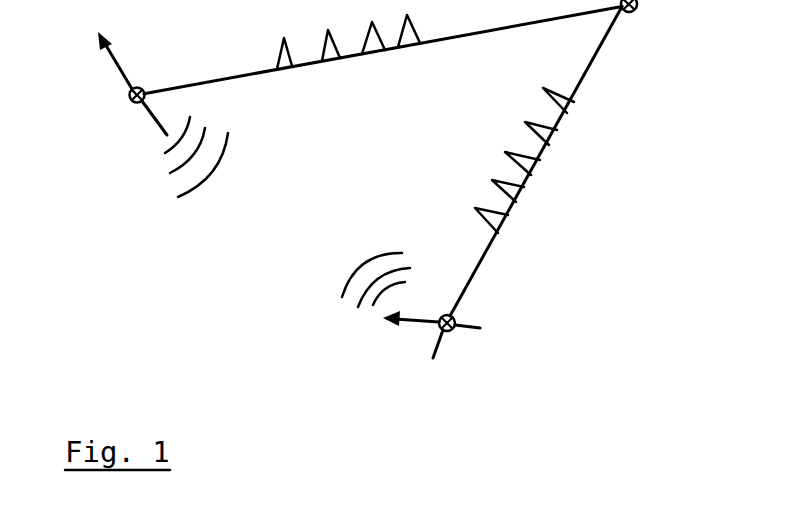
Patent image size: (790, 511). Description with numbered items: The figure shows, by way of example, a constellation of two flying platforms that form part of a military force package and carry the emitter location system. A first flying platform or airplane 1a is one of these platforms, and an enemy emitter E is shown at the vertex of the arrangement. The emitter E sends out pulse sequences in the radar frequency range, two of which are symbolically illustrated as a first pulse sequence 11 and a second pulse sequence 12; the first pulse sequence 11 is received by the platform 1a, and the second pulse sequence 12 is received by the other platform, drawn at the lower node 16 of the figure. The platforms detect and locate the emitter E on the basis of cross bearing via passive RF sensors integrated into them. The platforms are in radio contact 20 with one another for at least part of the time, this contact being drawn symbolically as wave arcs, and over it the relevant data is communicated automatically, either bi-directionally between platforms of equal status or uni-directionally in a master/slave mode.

The first flying platform 1a is at (128, 102).
The emitter E is at (641, 12).
The first pulse sequence 11 is at (356, 74).
The second pulse sequence 12 is at (548, 194).
The time scale 16 is at (431, 357).
The radio contact 20 is at (161, 215).